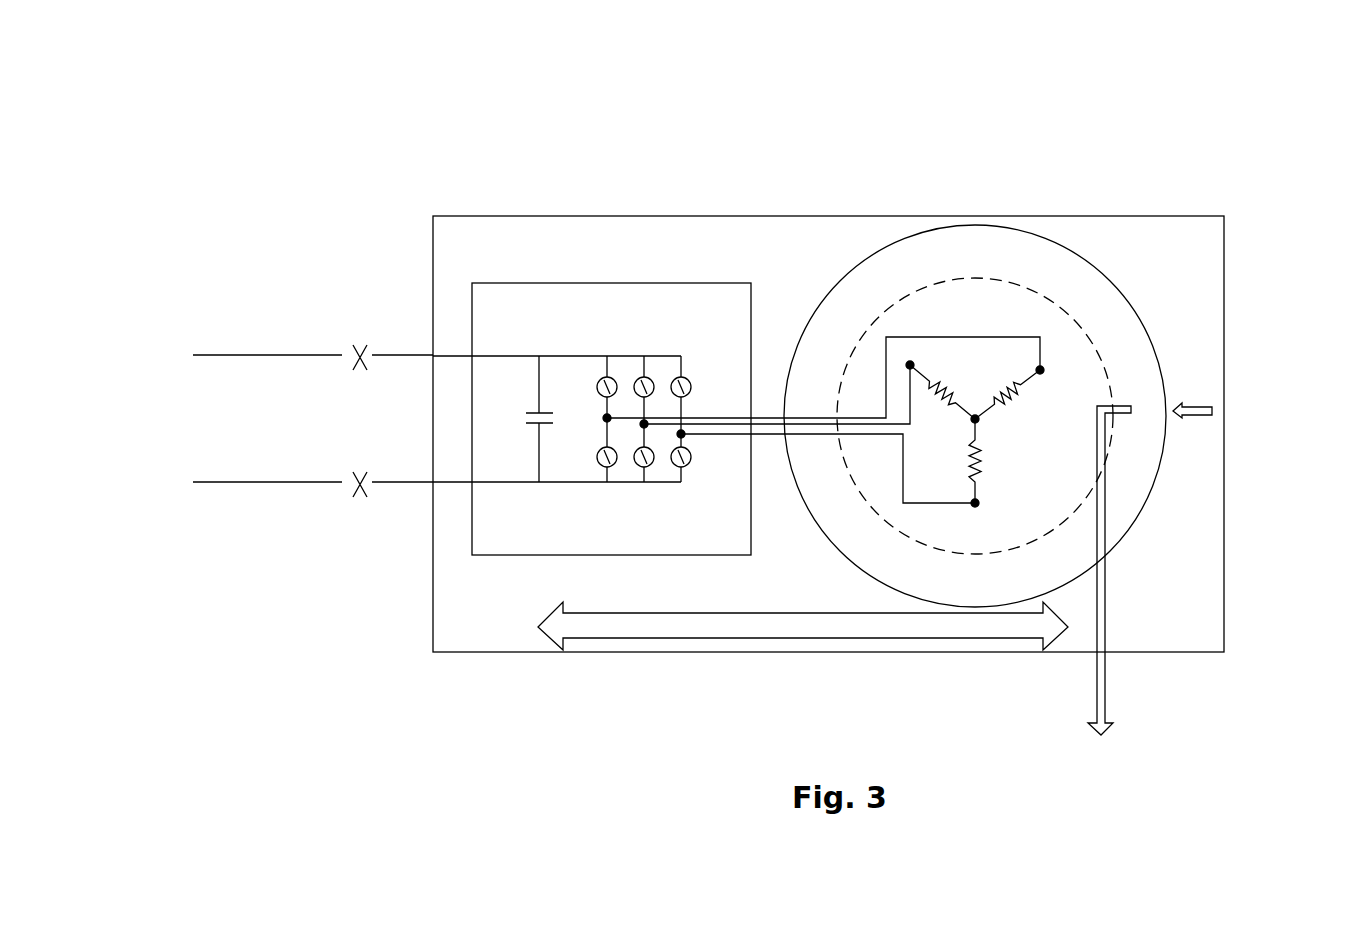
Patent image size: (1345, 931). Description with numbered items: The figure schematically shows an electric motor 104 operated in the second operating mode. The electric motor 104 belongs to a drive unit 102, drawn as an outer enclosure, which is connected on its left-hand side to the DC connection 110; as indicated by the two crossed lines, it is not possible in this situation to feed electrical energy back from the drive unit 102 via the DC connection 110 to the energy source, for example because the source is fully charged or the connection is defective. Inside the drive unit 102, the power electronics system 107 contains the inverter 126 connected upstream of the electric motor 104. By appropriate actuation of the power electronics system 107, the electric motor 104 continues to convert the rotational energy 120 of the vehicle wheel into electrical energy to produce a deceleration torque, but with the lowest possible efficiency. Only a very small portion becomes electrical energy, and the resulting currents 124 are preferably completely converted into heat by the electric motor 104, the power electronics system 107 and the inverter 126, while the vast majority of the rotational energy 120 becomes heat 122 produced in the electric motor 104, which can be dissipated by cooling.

The drive unit 102 is at (1082, 216).
The electric motor 104 is at (1125, 295).
The power electronics system 107 is at (575, 283).
The DC connection 110 is at (313, 483).
The rotational energy 120 is at (1212, 407).
The heat 122 is at (1100, 578).
The currents 124 is at (795, 627).
The inverter 126 is at (611, 387).